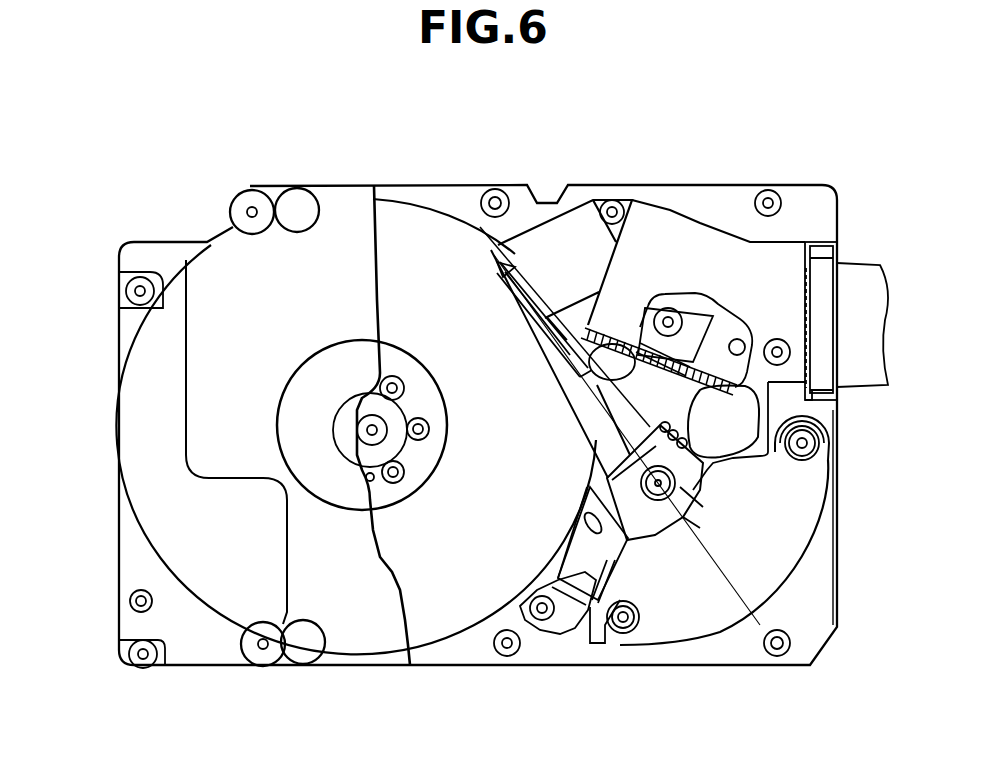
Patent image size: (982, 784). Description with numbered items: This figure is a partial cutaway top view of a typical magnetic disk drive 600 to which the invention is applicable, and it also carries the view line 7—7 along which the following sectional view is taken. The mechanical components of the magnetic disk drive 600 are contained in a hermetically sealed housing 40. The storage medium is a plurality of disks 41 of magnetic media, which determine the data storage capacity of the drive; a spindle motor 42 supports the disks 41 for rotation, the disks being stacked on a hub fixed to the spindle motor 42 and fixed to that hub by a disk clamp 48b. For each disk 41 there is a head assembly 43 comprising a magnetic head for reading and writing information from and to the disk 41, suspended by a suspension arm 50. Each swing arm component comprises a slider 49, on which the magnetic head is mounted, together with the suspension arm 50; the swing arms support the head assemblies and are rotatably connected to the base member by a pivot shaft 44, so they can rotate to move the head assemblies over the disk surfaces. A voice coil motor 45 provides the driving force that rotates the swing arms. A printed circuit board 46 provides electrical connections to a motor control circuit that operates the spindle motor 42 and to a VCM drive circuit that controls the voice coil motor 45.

The magnetic disk drive 600 is at (722, 133).
The housing 40 is at (460, 198).
The disks 41 is at (406, 237).
The spindle motor 42 is at (372, 452).
The head assembly 43 is at (540, 352).
The pivot shaft 44 is at (680, 478).
The voice coil motor 45 is at (672, 628).
The printed circuit board 46 is at (856, 287).
The disk clamp 48b is at (388, 485).
The slider 49 is at (496, 278).
The suspension arm 50 is at (604, 441).
The view line 7— 7 is at (49, 702).